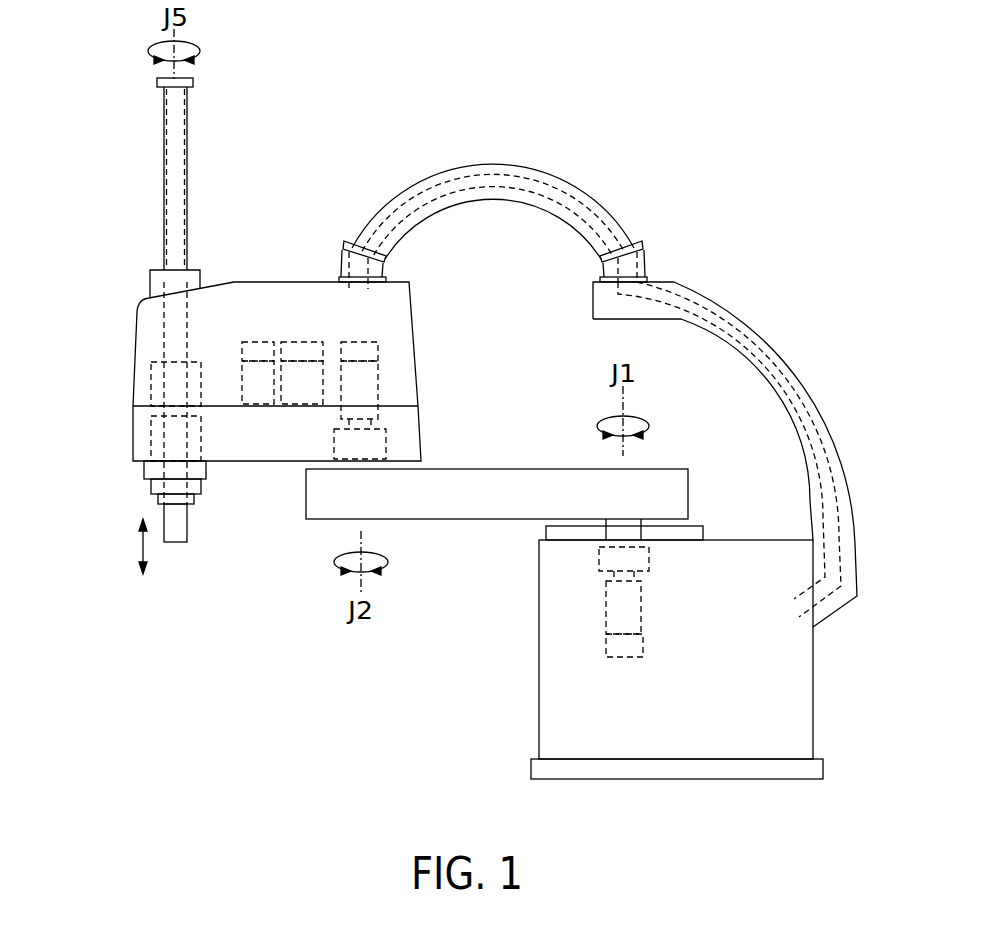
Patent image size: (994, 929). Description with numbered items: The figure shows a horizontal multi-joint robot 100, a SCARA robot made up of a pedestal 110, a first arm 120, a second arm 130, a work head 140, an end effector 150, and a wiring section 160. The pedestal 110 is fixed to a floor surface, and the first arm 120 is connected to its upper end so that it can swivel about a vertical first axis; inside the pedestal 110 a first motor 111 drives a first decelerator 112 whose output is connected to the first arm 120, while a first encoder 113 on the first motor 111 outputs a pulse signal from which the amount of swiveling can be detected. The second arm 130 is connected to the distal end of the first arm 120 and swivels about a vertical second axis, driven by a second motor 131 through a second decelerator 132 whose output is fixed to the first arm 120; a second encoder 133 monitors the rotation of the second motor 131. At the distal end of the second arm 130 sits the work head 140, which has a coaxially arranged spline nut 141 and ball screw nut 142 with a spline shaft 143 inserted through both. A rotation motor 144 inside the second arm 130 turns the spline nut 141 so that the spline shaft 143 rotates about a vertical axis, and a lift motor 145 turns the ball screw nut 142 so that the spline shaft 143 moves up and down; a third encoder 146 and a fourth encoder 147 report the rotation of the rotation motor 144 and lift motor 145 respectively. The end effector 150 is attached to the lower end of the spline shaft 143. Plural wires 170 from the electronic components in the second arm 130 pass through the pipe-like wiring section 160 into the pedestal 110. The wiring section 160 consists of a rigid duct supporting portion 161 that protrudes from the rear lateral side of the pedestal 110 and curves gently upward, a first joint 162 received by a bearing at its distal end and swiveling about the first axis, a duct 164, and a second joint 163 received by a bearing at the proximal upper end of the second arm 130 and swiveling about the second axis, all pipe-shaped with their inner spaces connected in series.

The horizontal multi-joint robot 100 is at (803, 125).
The pedestal 110 is at (555, 683).
The first motor 111 is at (642, 608).
The first decelerator 112 is at (648, 560).
The first encoder 113 is at (643, 647).
The first arm 120 is at (672, 470).
The second arm 130 is at (410, 315).
The second motor 131 is at (378, 375).
The second decelerator 132 is at (385, 440).
The second encoder 133 is at (362, 342).
The work head 140 is at (163, 122).
The spline nut 141 is at (150, 380).
The ball screw nut 142 is at (150, 430).
The spline shaft 143 is at (163, 173).
The rotation motor 144 is at (262, 408).
The lift motor 145 is at (297, 408).
The third encoder 146 is at (260, 342).
The fourth encoder 147 is at (298, 342).
The end effector 150 is at (186, 527).
The wiring section 160 is at (712, 277).
The duct supporting portion 161 is at (798, 377).
The first joint 162 is at (642, 262).
The second joint 163 is at (343, 252).
The duct 164 is at (565, 180).
The wires 170 is at (462, 188).